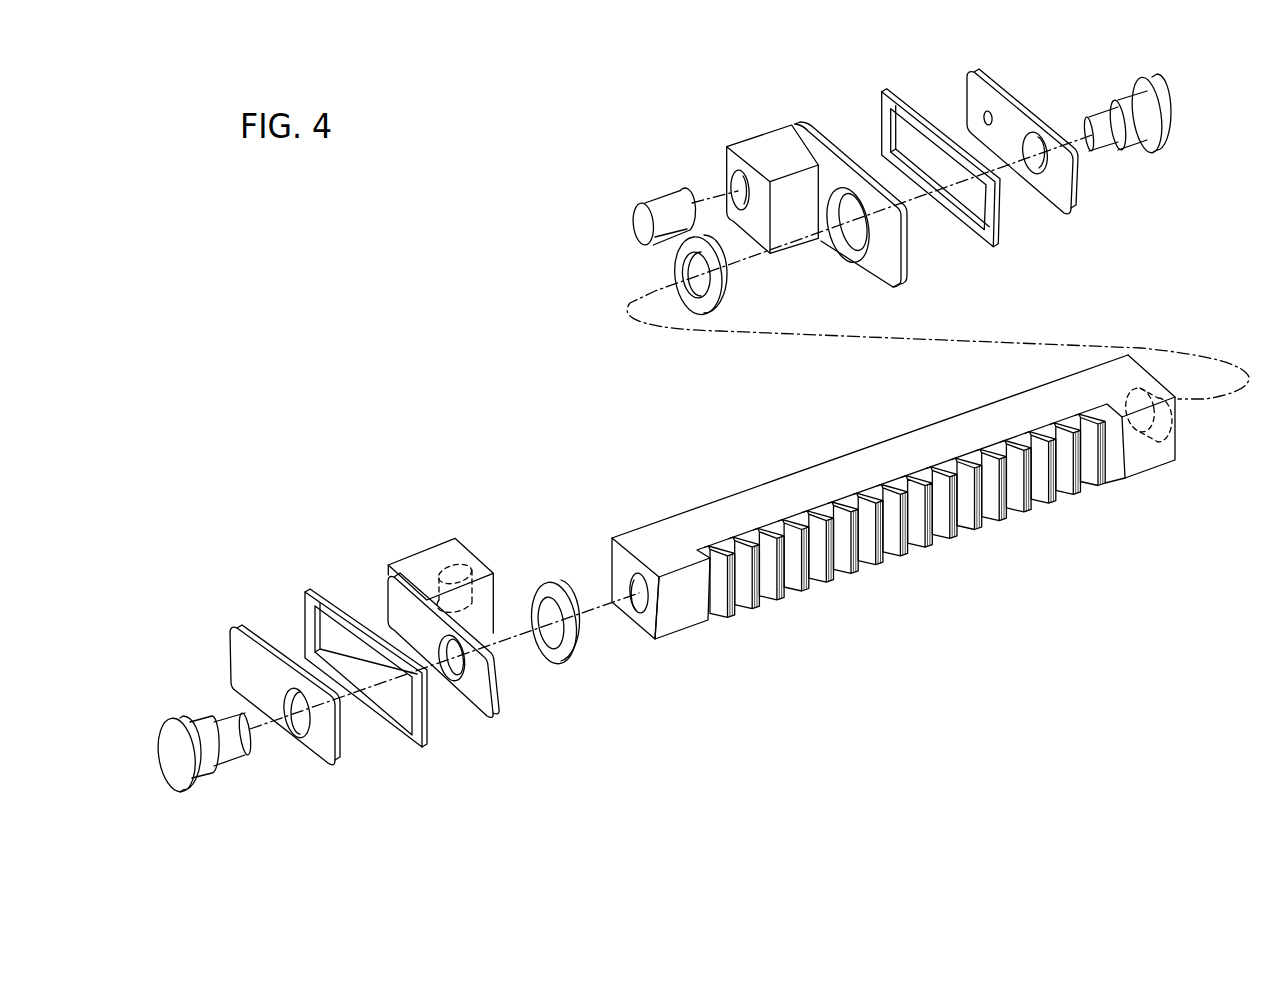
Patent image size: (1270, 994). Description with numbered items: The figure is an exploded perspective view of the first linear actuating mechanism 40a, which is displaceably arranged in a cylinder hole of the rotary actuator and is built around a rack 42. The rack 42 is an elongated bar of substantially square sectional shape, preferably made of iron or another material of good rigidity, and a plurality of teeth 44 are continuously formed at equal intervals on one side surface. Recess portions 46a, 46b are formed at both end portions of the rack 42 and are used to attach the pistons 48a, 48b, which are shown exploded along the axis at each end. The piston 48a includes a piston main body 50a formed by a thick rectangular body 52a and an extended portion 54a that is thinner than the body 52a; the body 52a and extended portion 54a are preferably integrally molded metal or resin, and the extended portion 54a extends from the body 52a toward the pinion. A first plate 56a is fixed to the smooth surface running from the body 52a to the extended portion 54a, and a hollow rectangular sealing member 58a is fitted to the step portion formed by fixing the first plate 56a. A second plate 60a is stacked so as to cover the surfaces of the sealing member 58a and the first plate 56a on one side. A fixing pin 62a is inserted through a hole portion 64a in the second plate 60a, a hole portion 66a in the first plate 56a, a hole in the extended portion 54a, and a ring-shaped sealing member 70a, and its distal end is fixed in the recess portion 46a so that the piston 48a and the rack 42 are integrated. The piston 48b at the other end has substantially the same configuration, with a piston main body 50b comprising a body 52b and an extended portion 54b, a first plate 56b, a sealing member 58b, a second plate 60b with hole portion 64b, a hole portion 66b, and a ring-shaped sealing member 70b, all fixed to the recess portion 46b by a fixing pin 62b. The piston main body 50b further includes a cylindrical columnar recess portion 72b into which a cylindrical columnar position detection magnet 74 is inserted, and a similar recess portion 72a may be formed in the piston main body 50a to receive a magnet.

The first linear actuating mechanism 40a is at (388, 217).
The rack 42 is at (823, 478).
The teeth 44 is at (770, 593).
The recess portion 46a is at (636, 615).
The recess portion 46b is at (1170, 425).
The piston 48a is at (378, 506).
The piston 48b is at (697, 95).
The piston main body 50a is at (456, 530).
The piston main body 50b is at (797, 122).
The body 52a is at (435, 558).
The body 52b is at (773, 140).
The extended portion 54a is at (505, 700).
The extended portion 54b is at (892, 270).
The first plate 56a is at (390, 598).
The first plate 56b is at (901, 252).
The sealing member 58a is at (390, 735).
The sealing member 58b is at (915, 107).
The second plate 60a is at (320, 748).
The second plate 60b is at (1048, 193).
The fixing pin 62a is at (213, 773).
The fixing pin 62b is at (1160, 112).
The hole portion 64a is at (293, 735).
The hole portion 64b is at (1035, 147).
The hole portion 66a is at (452, 670).
The hole portion 66b is at (848, 235).
The sealing member 70a is at (558, 657).
The sealing member 70b is at (721, 287).
The recess portion 72a is at (478, 555).
The recess portion 72b is at (741, 171).
The position detection magnet 74 is at (662, 205).